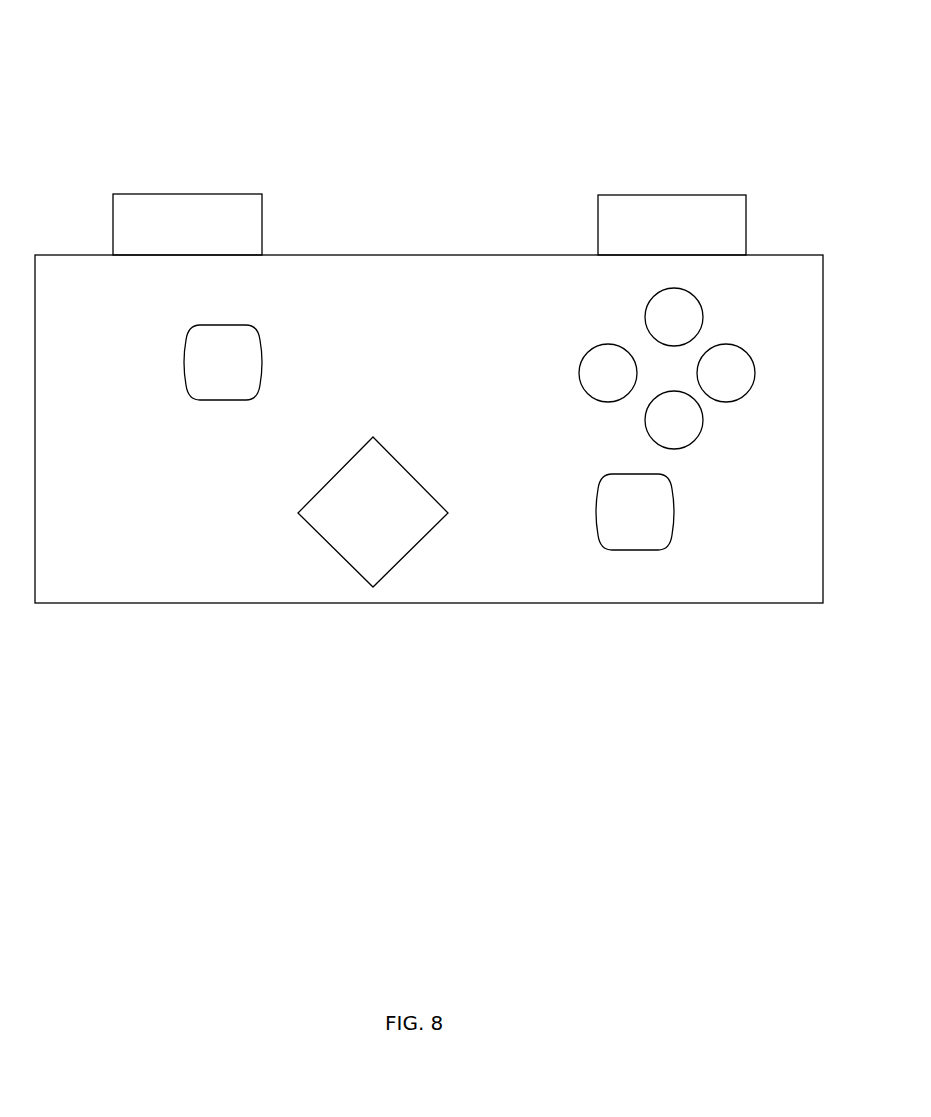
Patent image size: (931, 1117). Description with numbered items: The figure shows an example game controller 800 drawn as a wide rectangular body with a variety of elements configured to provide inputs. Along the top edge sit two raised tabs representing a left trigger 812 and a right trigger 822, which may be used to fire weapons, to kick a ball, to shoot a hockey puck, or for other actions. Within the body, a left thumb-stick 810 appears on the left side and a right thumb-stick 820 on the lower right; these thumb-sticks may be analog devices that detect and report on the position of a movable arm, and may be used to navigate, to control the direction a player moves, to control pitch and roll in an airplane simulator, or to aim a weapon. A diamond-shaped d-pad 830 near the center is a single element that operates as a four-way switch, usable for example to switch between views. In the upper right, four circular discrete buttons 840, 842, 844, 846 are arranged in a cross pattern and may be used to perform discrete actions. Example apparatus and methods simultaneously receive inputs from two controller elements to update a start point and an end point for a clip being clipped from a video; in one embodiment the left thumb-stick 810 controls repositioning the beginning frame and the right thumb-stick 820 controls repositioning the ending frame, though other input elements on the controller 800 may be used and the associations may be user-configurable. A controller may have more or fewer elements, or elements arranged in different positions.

The game controller 800 is at (369, 152).
The left trigger 812 is at (168, 238).
The right trigger 822 is at (652, 239).
The left thumb-stick 810 is at (204, 373).
The right thumb-stick 820 is at (616, 525).
The d-pad 830 is at (354, 525).
The button 840 is at (655, 327).
The button 842 is at (707, 383).
The button 844 is at (655, 430).
The button 846 is at (589, 383).